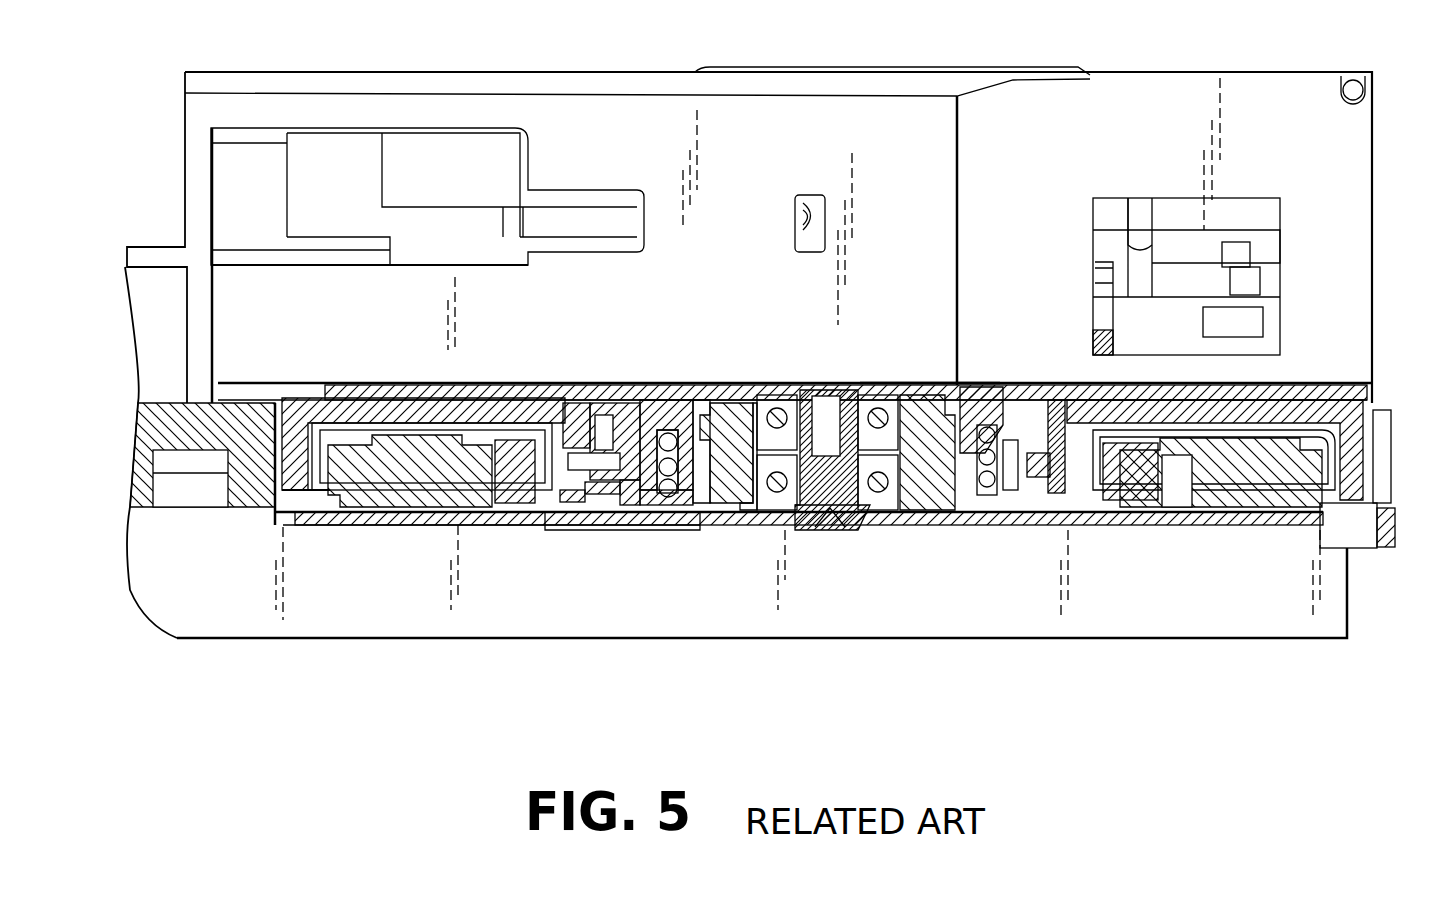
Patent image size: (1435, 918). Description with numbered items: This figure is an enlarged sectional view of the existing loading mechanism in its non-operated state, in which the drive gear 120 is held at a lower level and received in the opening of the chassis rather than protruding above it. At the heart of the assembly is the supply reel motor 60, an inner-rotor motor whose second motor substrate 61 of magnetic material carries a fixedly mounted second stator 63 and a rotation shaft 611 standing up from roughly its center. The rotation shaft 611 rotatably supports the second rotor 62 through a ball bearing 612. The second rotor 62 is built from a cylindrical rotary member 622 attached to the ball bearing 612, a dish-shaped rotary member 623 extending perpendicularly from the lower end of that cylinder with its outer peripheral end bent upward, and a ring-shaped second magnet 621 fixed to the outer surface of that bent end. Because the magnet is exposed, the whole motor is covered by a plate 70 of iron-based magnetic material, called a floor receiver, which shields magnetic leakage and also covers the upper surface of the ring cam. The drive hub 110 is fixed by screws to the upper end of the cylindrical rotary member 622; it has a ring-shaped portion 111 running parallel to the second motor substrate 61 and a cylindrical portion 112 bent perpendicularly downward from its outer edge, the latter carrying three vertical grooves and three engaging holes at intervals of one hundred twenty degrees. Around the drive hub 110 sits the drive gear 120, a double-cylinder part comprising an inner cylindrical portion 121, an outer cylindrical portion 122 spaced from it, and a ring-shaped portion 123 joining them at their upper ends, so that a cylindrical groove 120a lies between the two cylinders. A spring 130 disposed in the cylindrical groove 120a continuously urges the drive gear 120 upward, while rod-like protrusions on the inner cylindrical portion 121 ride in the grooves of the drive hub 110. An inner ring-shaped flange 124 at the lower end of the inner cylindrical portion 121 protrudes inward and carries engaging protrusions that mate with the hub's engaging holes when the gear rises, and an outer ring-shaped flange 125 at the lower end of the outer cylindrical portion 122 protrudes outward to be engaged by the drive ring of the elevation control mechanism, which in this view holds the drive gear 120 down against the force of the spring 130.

The drive hub 110 is at (752, 395).
The ring-shaped portion 111 is at (930, 398).
The cylindrical portion 112 is at (703, 396).
The drive gear 120 is at (966, 390).
The cylindrical groove 120a is at (992, 400).
The inner cylindrical portion 121 is at (690, 505).
The outer cylindrical portion 122 is at (660, 398).
The ring-shaped portion 123 is at (668, 400).
The inner ring-shaped flange 124 is at (735, 478).
The outer ring-shaped flange 125 is at (645, 492).
The spring 130 is at (1010, 505).
The second reel motor 60 is at (905, 498).
The second motor substrate 61 is at (655, 510).
The second rotor 62 is at (740, 490).
The second stator 63 is at (398, 485).
The plate 70 is at (1325, 385).
The rotation shaft 611 is at (838, 515).
The ball bearing 612 is at (792, 495).
The second magnet 621 is at (520, 480).
The cylindrical rotary member 622 is at (922, 480).
The dish-shaped rotary member 623 is at (600, 488).